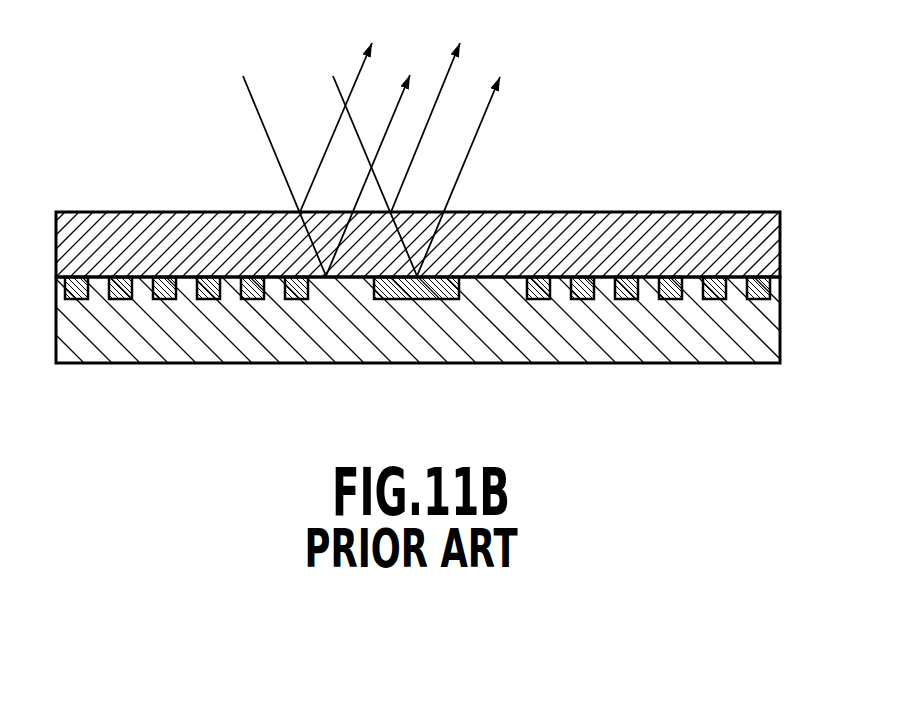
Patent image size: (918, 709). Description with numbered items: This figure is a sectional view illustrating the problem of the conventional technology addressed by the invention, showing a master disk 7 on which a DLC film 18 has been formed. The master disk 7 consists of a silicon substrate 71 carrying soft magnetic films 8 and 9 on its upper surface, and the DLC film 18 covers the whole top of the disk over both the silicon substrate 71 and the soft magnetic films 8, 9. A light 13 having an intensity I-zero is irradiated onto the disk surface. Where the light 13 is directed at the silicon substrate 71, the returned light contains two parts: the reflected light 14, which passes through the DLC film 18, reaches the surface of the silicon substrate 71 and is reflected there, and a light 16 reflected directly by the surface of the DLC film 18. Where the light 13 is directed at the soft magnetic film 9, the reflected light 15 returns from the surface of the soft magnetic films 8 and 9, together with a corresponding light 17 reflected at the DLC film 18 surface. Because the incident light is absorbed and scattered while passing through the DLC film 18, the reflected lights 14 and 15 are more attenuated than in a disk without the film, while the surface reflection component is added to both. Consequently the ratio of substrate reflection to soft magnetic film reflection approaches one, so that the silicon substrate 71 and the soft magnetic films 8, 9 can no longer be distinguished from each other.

The master disk 7 is at (428, 353).
The silicon substrate 71 is at (753, 340).
The soft magnetic film 8 is at (714, 277).
The soft magnetic film 9 is at (417, 299).
The DLC film 18 is at (631, 222).
The light 13 is at (321, 161).
The reflected light 14 is at (375, 162).
The reflected light 15 is at (467, 162).
The light reflected by the surface of the DLC film 16 is at (343, 113).
The surface reflected light 17 is at (434, 113).